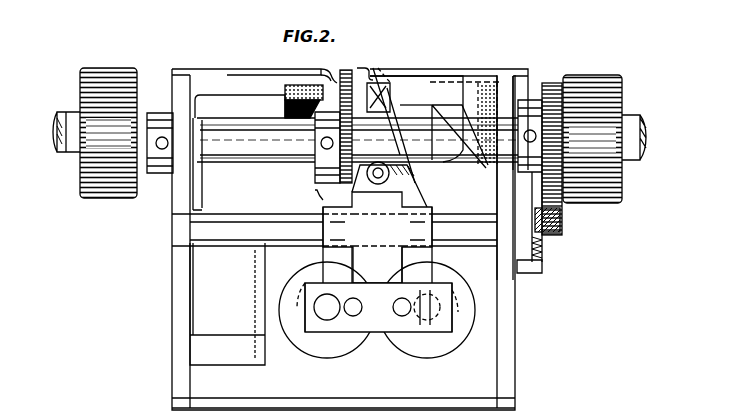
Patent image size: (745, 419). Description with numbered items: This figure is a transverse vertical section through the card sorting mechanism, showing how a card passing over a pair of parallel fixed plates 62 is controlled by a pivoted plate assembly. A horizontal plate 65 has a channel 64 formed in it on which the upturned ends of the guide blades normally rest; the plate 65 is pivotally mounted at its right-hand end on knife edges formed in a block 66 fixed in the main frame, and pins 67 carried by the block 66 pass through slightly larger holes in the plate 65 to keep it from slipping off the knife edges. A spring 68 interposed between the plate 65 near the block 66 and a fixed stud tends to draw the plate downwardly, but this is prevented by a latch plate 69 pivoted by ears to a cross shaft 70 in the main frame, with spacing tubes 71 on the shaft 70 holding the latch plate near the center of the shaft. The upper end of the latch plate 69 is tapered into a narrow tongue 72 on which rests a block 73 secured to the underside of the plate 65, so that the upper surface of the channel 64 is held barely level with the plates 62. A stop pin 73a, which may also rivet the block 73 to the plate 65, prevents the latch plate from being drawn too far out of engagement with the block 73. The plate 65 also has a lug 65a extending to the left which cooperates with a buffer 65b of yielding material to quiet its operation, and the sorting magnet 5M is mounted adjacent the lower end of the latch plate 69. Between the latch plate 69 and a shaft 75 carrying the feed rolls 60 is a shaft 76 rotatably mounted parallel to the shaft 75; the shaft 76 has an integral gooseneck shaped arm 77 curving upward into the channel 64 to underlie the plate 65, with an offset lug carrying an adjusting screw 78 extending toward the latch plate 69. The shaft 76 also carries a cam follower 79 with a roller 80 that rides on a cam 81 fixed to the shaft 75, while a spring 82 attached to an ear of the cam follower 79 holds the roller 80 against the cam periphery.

The feed rolls 60 is at (114, 78).
The fixed plates 62 is at (245, 66).
The channel 64 is at (343, 72).
The horizontal plate 65 is at (400, 80).
The lug 65a is at (283, 82).
The buffer 65b is at (283, 100).
The block 66 is at (523, 88).
The pins 67 is at (490, 83).
The spring 68 is at (456, 166).
The latch plate 69 is at (323, 198).
The cross shaft 70 is at (382, 240).
The spacing tubes 71 is at (235, 232).
The tongue 72 is at (388, 122).
The block 73 is at (391, 95).
The stop pin 73a is at (383, 86).
The shaft 75 is at (72, 152).
The shaft 76 is at (245, 163).
The gooseneck shaped arm 77 is at (334, 88).
The adjusting screw 78 is at (385, 186).
The cam follower 79 is at (562, 218).
The roller 80 is at (548, 240).
The cam 81 is at (560, 134).
The spring 82 is at (544, 262).
The wheels 5M is at (410, 348).